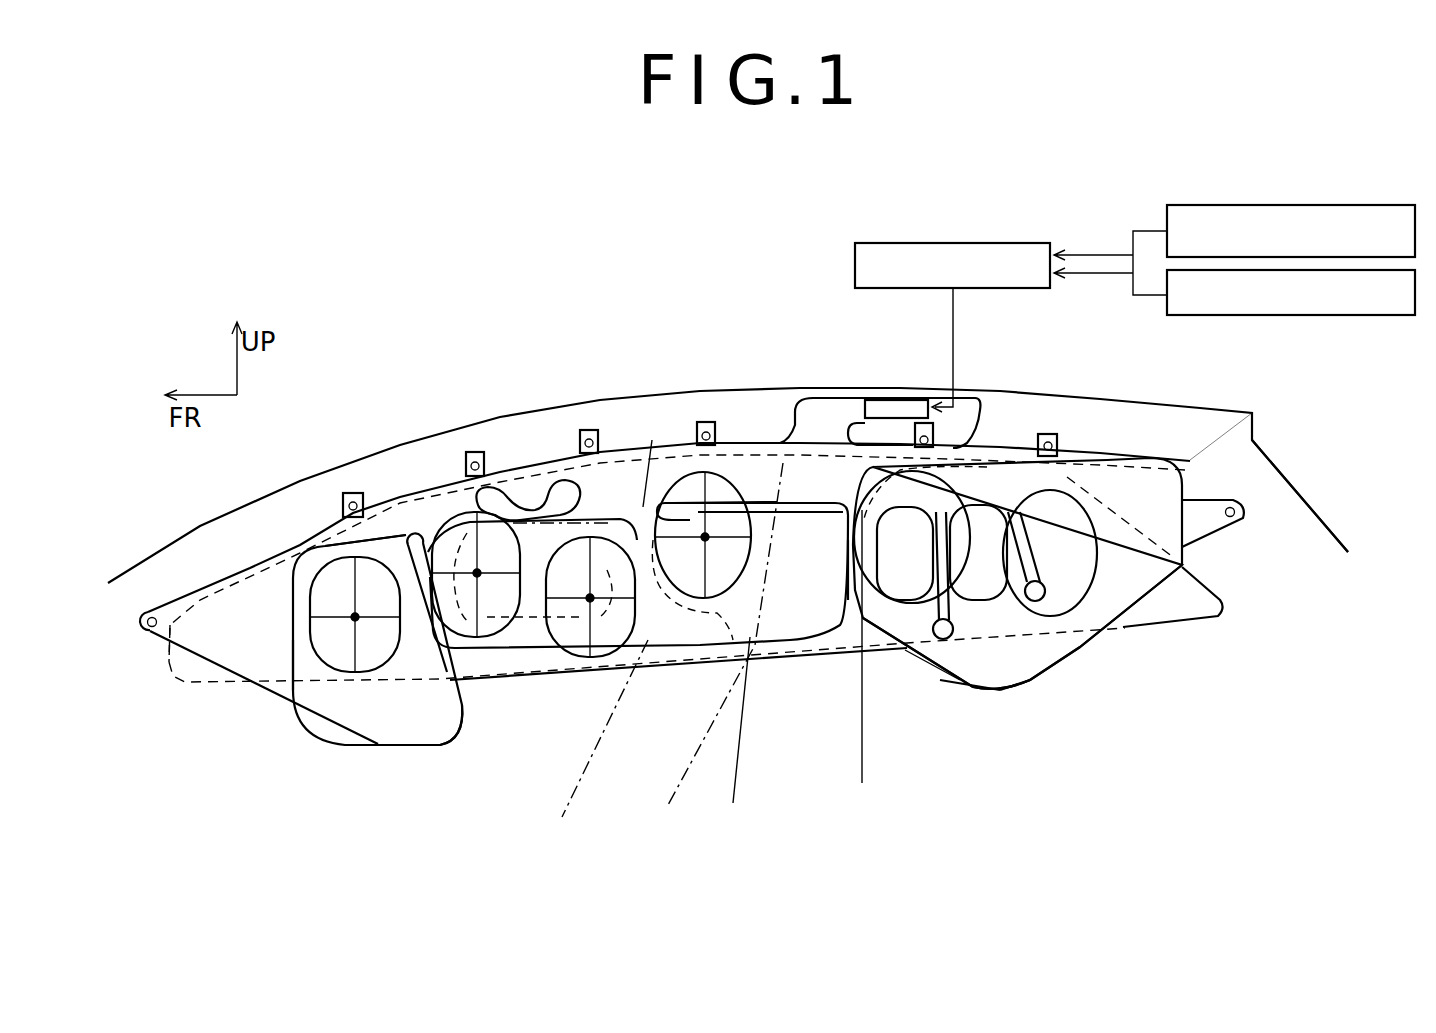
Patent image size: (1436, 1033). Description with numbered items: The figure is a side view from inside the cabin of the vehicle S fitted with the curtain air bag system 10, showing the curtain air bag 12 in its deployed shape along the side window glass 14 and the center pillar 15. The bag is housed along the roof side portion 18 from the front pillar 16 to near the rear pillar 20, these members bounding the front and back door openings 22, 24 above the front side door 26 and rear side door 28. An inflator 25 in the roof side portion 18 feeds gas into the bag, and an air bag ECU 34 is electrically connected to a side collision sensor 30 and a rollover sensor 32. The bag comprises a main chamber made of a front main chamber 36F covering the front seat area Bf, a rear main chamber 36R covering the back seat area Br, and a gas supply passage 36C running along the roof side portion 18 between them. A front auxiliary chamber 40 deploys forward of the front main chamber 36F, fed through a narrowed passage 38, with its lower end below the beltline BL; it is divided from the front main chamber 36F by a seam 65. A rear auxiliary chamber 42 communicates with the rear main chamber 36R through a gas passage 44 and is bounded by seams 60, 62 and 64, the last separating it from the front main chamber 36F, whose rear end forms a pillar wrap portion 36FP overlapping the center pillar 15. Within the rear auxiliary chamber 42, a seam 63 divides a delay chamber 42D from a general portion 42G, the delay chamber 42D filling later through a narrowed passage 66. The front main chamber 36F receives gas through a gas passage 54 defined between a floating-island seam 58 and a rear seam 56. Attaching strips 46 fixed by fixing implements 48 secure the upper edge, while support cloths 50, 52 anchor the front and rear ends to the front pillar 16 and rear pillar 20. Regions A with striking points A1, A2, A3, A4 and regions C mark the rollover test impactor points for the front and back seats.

The curtain air bag system 10 is at (348, 765).
The curtain air bag 12 is at (769, 427).
The side window glass 14 is at (202, 672).
The center pillar 15 is at (847, 723).
The front pillar 16 is at (215, 537).
The roof side portion 18 is at (783, 438).
The rear pillar 20 is at (1280, 485).
The front door opening 22 is at (440, 505).
The back door opening 24 is at (987, 467).
The inflator 25 is at (905, 408).
The front side door 26 is at (467, 723).
The rear side door 28 is at (1047, 700).
The side collision sensor 30 is at (1213, 205).
The rollover sensor 32 is at (1293, 317).
The air bag ECU 34 is at (952, 243).
The gas supply passage 36C is at (840, 395).
The rear main chamber 36R is at (1127, 460).
The front main chamber 36F is at (672, 640).
The pillar wrap portion 36FP is at (787, 663).
The narrowed passage 38 is at (412, 527).
The front auxiliary chamber 40 is at (330, 707).
The rear auxiliary chamber 42 is at (1025, 805).
The delay chamber 42D is at (917, 620).
The general portion 42G is at (973, 617).
The gas passage 44 is at (1070, 643).
The attaching strips 46 is at (343, 498).
The fixing implements 48 is at (350, 493).
The support cloth 50 is at (178, 682).
The support cloth 52 is at (1207, 523).
The gas passage 54 is at (648, 510).
The seam 56 is at (757, 503).
The seam 58 is at (530, 490).
The seam 60 is at (980, 495).
The seam 62 is at (1022, 552).
The seam 63 is at (930, 592).
The seam 64 is at (840, 607).
The seam 65 is at (422, 680).
The narrowed passage 66 is at (940, 647).
The regions A is at (380, 560).
The striking point A1 is at (355, 617).
The striking point A2 is at (600, 658).
The striking point A3 is at (478, 578).
The striking point A4 is at (707, 540).
The area Bf is at (433, 717).
The area Br is at (1165, 462).
The beltline BL is at (490, 670).
The regions C is at (977, 440).
The vehicle S is at (1229, 398).